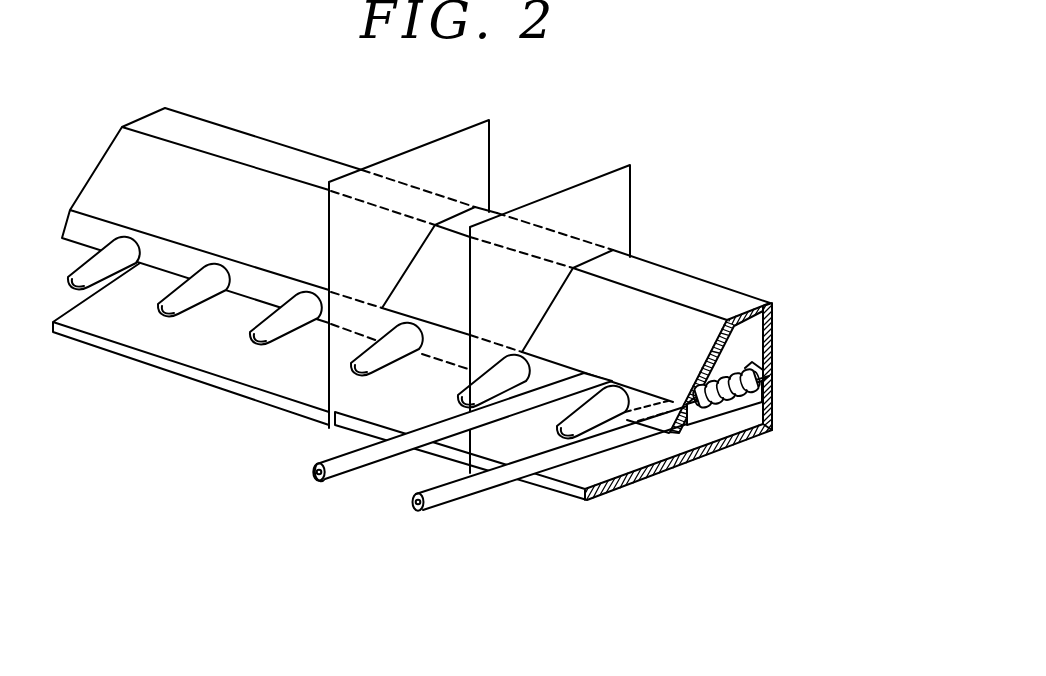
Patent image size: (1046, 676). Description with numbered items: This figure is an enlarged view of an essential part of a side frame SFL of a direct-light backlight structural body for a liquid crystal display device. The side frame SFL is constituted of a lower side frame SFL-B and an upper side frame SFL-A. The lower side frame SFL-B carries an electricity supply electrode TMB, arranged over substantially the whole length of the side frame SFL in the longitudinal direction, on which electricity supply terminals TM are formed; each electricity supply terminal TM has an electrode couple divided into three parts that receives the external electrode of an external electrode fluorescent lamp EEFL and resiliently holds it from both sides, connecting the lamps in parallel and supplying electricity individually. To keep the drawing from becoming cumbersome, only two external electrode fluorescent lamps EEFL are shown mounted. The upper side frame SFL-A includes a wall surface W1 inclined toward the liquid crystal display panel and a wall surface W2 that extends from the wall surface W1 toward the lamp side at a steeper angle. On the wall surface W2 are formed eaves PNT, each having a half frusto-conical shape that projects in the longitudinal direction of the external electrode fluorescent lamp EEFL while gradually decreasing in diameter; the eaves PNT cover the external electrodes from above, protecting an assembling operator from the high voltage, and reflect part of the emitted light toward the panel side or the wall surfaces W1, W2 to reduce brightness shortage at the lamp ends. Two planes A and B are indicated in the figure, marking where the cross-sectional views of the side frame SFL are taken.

The wall surface W1 is at (278, 202).
The wall surface W2 is at (245, 292).
The eaves PNT is at (193, 303).
The plane A is at (625, 193).
The plane B is at (478, 141).
The external electrode fluorescent lamp EEFL is at (472, 492).
The side frame SFL is at (723, 310).
The upper side frame SFL-A is at (700, 278).
The lower side frame SFL-B is at (773, 332).
The electricity supply electrode TMB is at (703, 420).
The electricity supply terminal TM is at (737, 397).